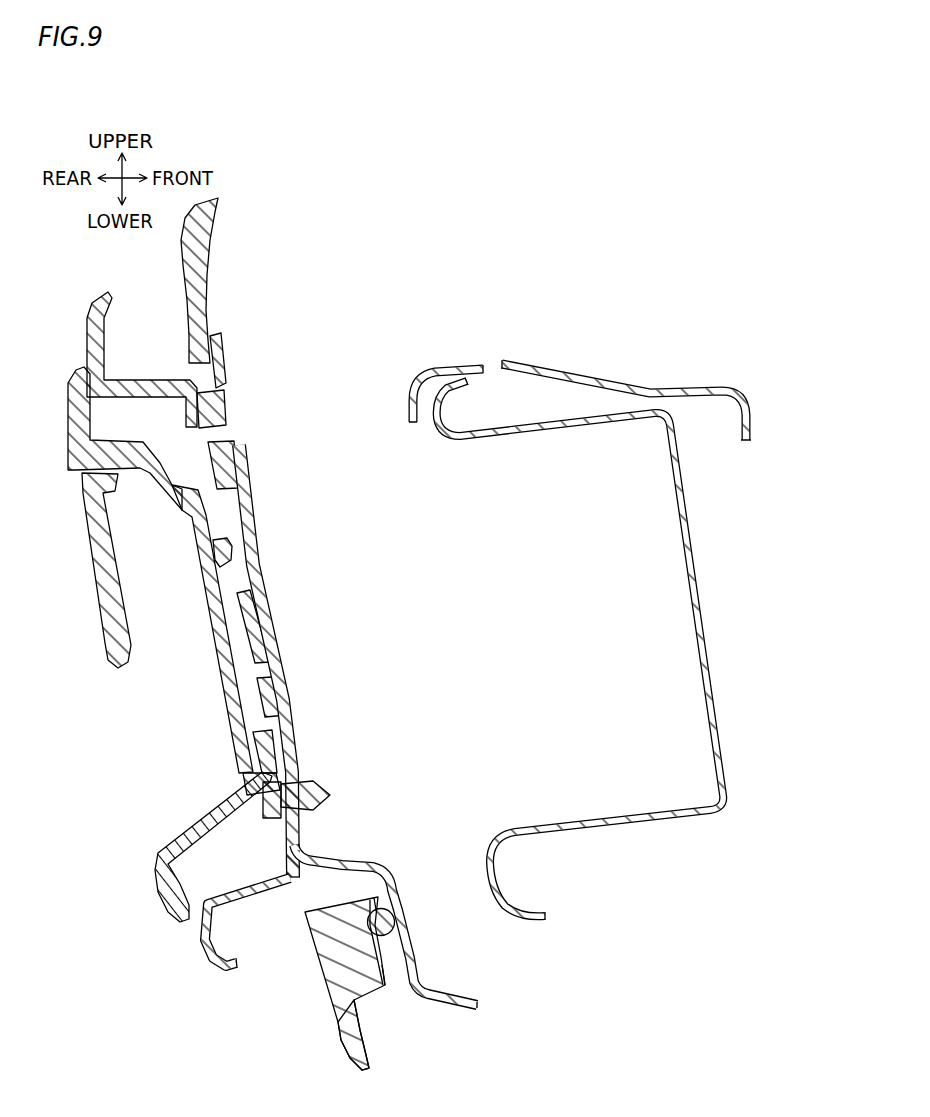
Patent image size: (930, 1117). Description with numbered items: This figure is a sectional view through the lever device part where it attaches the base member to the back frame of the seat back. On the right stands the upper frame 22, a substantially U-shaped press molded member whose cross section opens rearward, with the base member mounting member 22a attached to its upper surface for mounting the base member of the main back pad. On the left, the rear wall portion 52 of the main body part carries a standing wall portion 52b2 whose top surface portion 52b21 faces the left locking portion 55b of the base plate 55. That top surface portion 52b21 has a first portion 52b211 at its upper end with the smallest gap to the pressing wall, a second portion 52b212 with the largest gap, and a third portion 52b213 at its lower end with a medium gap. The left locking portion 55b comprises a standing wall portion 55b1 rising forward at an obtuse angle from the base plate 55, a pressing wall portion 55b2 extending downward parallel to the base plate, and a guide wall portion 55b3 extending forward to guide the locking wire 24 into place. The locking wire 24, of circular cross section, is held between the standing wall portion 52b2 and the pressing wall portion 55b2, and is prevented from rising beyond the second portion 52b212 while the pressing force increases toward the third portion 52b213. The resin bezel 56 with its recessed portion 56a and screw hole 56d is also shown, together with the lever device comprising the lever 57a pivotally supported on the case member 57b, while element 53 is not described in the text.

The side frame (seat back frame 51, seat 50) 53 is at (210, 265).
The lever 57a is at (95, 602).
The case member 57b is at (180, 835).
The base plate 55 is at (276, 627).
The left locking portion 55b is at (418, 926).
The standing wall portion 55b1 is at (337, 857).
The pressing wall portion 55b2 is at (400, 903).
The guide wall portion 55b3 is at (457, 992).
The bezel 56 is at (265, 893).
The recessed portion 56a is at (285, 866).
The screw hole 56d is at (308, 784).
The locking wire 24 is at (390, 923).
The rear wall portion 52 is at (338, 1047).
The standing wall portion 52b2 is at (376, 992).
The top surface portion 52b21 is at (381, 957).
The first portion 52b211 is at (391, 880).
The second portion 52b212 is at (337, 973).
The third portion 52b213 is at (384, 972).
The upper frame 22 is at (690, 510).
The base member mounting member 22a is at (572, 368).